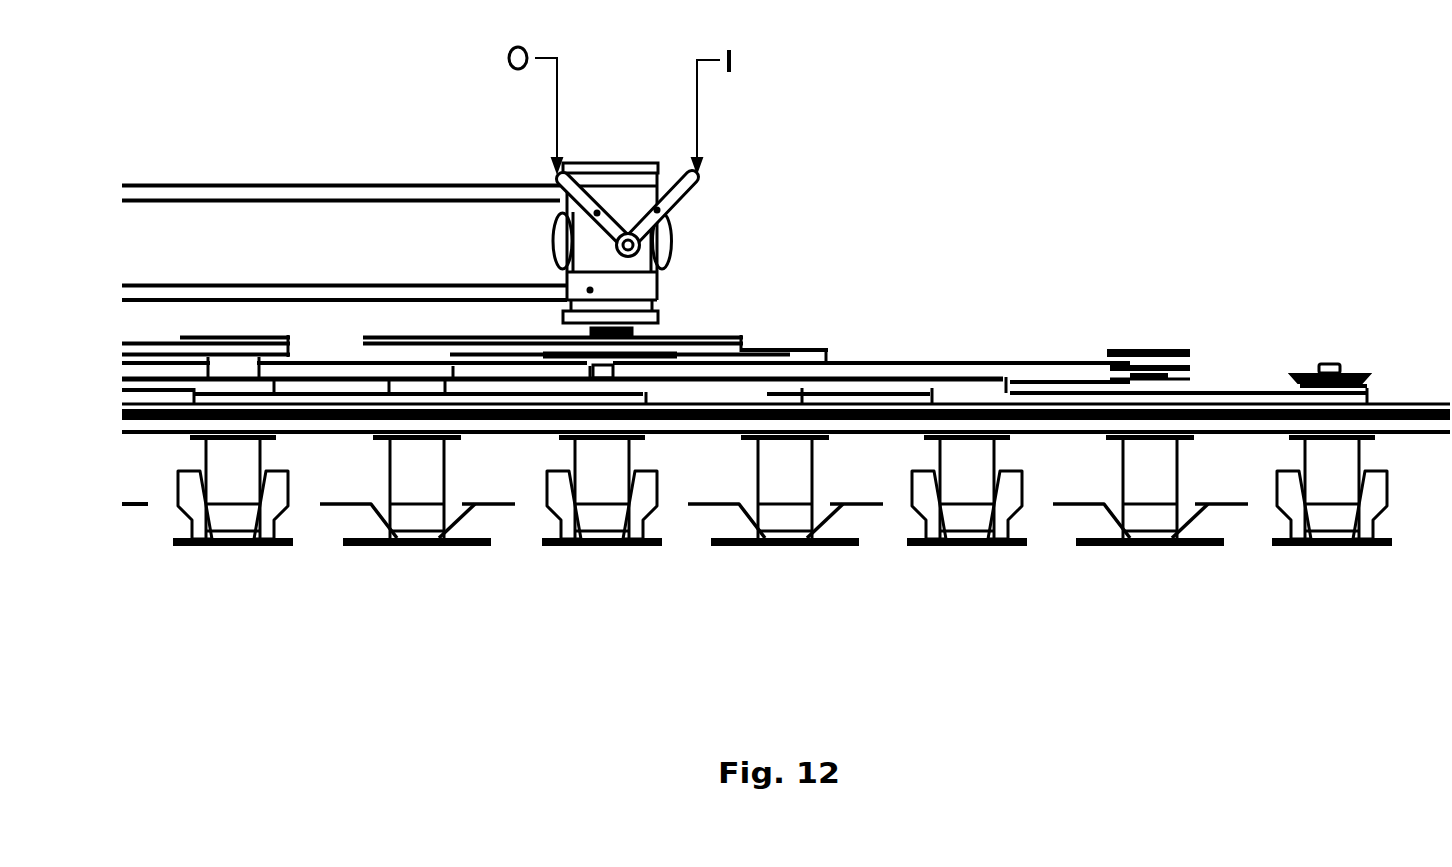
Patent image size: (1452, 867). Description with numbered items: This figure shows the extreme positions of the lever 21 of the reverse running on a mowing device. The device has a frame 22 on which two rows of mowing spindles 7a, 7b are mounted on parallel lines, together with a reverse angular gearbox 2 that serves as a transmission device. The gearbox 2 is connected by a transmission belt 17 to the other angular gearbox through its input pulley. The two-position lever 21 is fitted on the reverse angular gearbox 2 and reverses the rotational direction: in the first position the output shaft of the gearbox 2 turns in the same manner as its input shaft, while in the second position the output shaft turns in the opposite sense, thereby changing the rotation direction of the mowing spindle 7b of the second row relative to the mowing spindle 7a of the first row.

The reverse angular gearbox 2 is at (590, 290).
The transmission belt 17 is at (348, 193).
The lever of the reverse running 21 is at (597, 213).
The frame 22 is at (1427, 403).
The mowing spindle 7a is at (1333, 473).
The mowing spindle 7b is at (1152, 473).